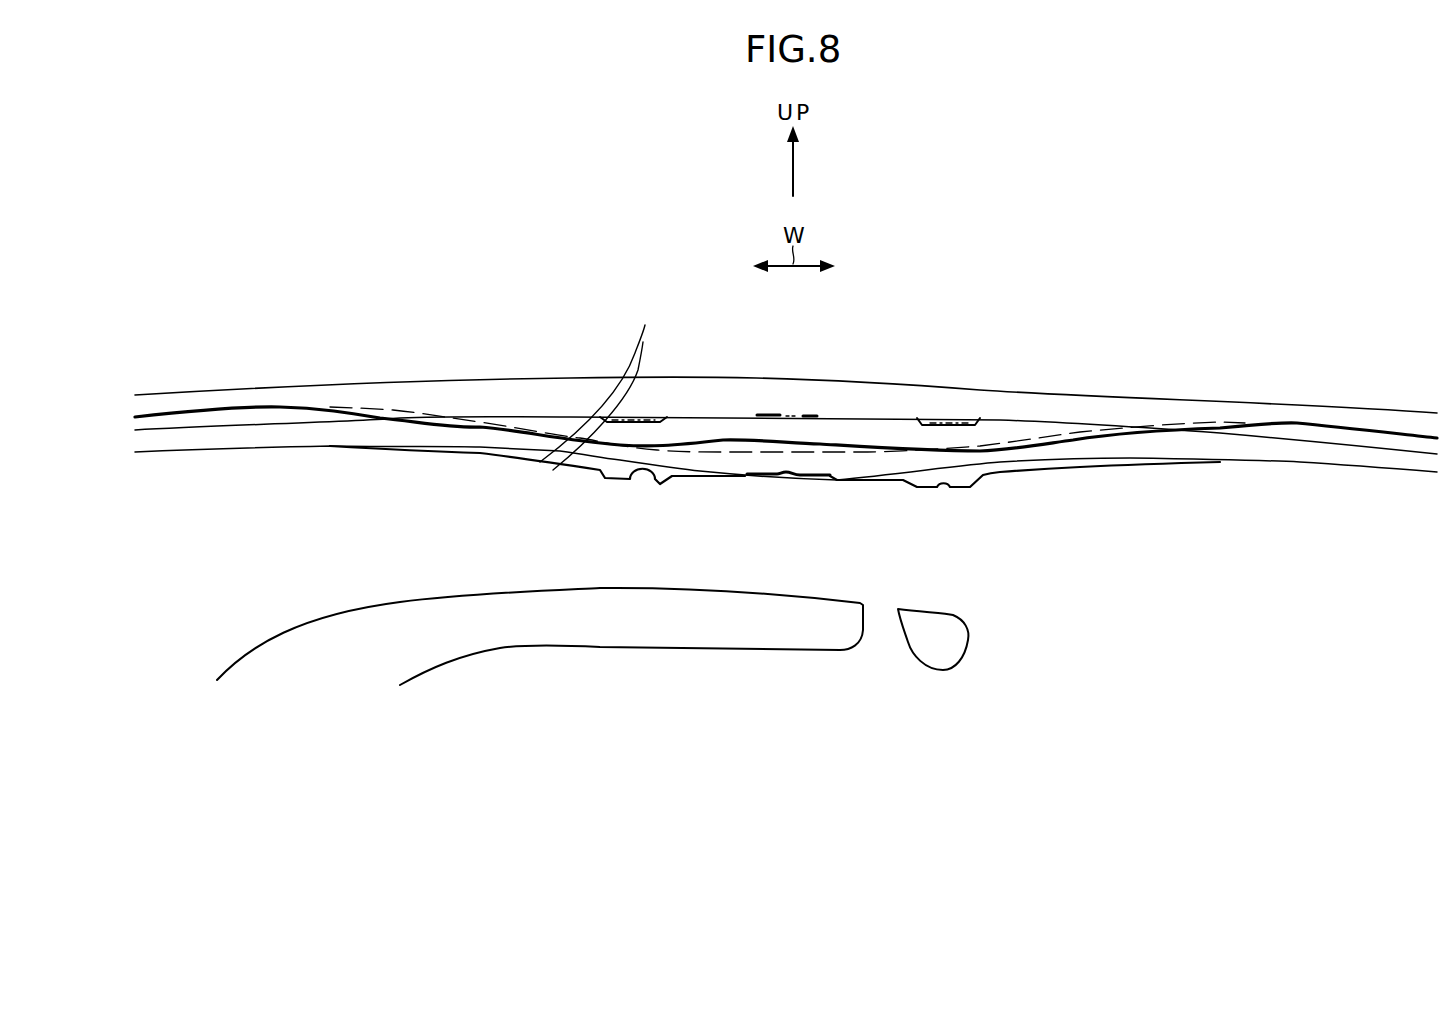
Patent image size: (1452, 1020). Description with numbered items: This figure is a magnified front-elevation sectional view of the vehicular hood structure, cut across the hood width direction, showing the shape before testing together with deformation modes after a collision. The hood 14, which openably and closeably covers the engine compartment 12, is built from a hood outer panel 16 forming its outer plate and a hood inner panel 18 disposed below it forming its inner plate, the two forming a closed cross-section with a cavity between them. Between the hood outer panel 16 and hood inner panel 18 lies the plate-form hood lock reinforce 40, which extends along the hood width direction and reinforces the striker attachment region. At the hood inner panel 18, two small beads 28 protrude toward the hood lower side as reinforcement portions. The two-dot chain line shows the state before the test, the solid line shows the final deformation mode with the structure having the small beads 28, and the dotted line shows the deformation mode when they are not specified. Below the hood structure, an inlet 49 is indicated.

The engine compartment 12 is at (1100, 600).
The hood 14 is at (993, 348).
The hood outer panel 16 is at (1027, 376).
The hood inner panel 18 is at (1067, 472).
The small bead 28 is at (650, 416).
The hood lock reinforce 40 is at (805, 413).
The inlet 49 is at (558, 590).